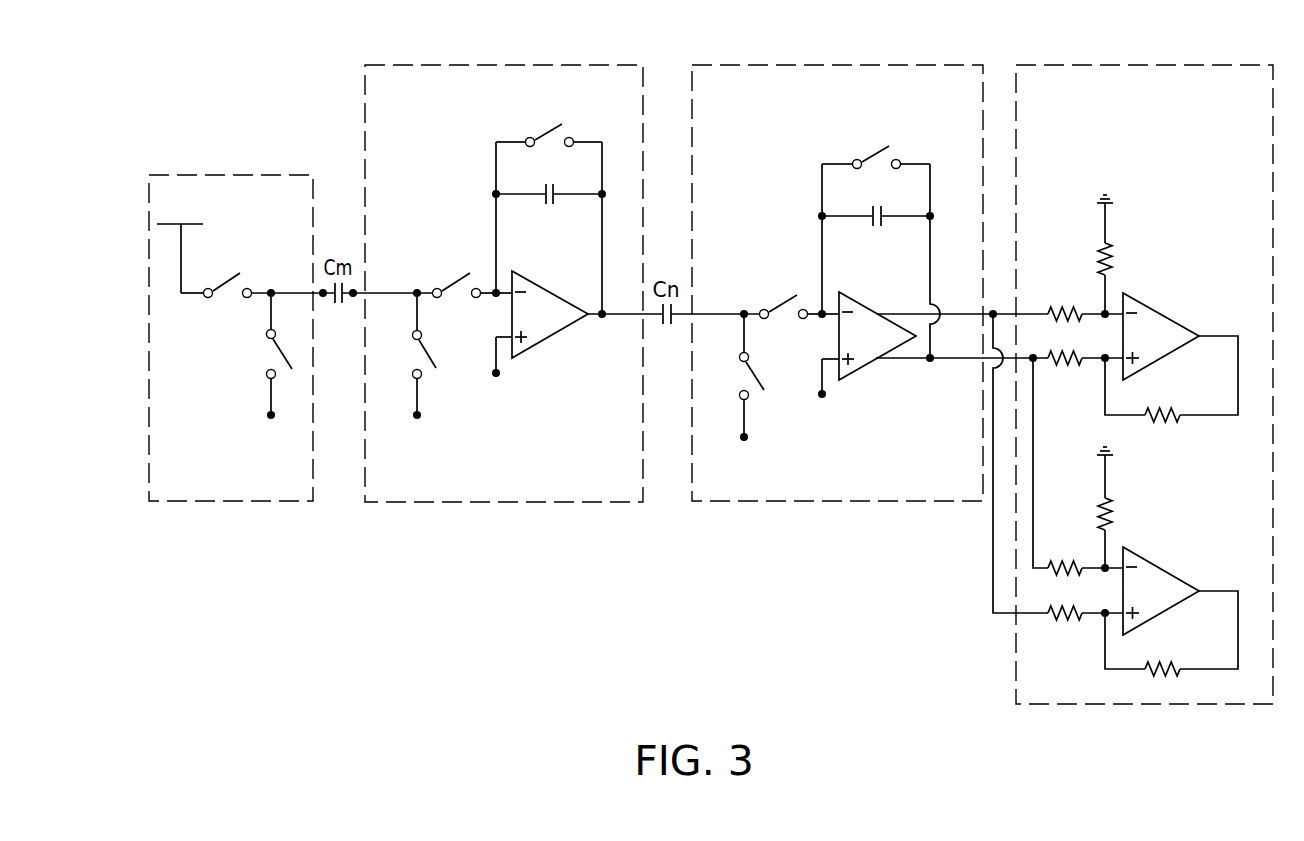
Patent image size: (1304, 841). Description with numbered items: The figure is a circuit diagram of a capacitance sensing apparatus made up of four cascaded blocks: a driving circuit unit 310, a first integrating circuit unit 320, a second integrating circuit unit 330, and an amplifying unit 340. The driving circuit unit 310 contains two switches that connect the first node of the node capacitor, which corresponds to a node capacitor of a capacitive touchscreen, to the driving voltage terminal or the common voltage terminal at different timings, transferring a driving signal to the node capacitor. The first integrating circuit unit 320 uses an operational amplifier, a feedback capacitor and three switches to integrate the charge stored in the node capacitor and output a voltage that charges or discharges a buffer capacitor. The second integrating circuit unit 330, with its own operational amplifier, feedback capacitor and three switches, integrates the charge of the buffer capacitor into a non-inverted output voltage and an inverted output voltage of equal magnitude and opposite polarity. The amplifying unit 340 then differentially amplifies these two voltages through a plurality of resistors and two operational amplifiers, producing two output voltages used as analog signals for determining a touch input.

The driving circuit unit 310 is at (236, 174).
The first integrating circuit unit 320 is at (506, 63).
The second integrating circuit unit 330 is at (833, 63).
The amplifying unit 340 is at (1149, 63).